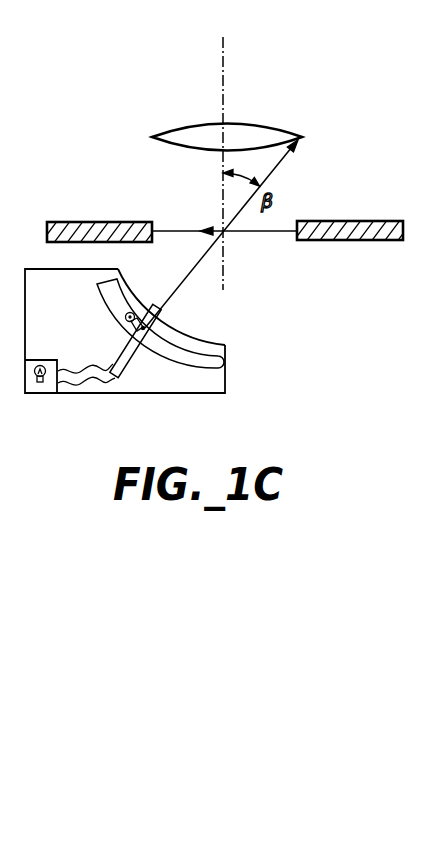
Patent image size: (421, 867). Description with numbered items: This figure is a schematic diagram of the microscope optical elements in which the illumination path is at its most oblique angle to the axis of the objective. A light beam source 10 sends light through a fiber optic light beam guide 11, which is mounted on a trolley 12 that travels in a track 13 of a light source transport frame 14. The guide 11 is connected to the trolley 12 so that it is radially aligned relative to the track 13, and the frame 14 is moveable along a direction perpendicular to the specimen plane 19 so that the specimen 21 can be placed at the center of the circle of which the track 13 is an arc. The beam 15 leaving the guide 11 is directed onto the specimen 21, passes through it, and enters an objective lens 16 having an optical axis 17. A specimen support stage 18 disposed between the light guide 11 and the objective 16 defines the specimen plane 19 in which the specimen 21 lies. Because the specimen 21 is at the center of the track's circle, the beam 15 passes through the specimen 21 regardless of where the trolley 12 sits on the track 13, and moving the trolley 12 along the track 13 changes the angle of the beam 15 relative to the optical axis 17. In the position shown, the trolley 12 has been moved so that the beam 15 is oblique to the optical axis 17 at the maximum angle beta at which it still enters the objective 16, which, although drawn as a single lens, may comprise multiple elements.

The light beam source 10 is at (55, 386).
The fiber optic light beam guide 11 is at (115, 378).
The trolley 12 is at (126, 329).
The track 13 is at (224, 359).
The light source transport means (frame) 14 is at (68, 276).
The beam 15 is at (189, 273).
The objective lens means 16 is at (279, 126).
The optical axis 17 is at (227, 78).
The specimen support stage 18 is at (327, 222).
The specimen plane 19 is at (175, 226).
The specimen 21 is at (228, 234).